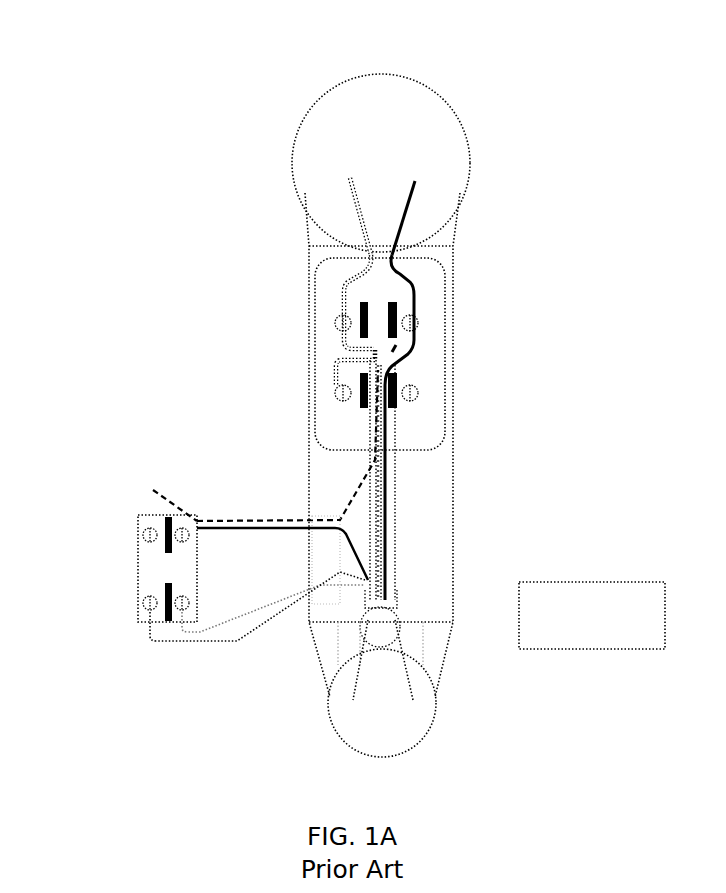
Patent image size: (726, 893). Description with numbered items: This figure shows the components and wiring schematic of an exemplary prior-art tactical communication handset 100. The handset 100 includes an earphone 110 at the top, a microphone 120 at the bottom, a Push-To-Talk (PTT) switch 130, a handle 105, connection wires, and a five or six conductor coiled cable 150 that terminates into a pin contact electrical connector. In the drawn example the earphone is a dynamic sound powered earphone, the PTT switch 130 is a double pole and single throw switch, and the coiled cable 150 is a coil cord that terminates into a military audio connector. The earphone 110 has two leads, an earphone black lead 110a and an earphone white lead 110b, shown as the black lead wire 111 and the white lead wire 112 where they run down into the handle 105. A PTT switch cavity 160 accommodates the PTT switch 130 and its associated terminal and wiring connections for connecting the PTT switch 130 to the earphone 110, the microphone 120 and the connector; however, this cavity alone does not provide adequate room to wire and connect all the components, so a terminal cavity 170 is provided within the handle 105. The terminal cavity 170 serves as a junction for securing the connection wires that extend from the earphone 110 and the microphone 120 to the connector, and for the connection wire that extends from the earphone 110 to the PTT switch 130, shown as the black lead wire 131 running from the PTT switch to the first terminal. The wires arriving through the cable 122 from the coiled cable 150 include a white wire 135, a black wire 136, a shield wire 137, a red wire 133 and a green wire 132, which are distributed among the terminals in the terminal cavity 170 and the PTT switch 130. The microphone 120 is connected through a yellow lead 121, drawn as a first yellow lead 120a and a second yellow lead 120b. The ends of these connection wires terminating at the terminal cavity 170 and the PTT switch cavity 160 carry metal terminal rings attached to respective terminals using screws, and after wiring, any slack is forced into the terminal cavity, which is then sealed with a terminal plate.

The tactical communication handset 100 is at (158, 118).
The handle 105 is at (211, 222).
The earphone 110 is at (381, 148).
The earphone black lead 110a is at (419, 195).
The earphone white lead 110b is at (345, 195).
The black lead wire 111 is at (410, 215).
The white lead wire 112 is at (352, 212).
The terminal cavity 170 is at (448, 260).
The white wire from cable 135 is at (335, 344).
The black wire from cable 136 is at (412, 354).
The black lead wire from PTT switch to terminal 1 131 is at (153, 488).
The shield wire from cable 137 is at (368, 430).
The Push-To-Talk (PTT) switch 130 is at (146, 568).
The PTT switch cavity 160 is at (277, 560).
The cable 122 is at (402, 556).
The red wire from cable 133 is at (210, 532).
The green wire from cable 132 is at (173, 650).
The coiled cable 150 is at (404, 612).
The microphone 120 is at (382, 721).
The yellow lead 121 is at (362, 678).
The microphone yellow lead 1 120a is at (318, 717).
The microphone yellow lead 2 120b is at (440, 672).